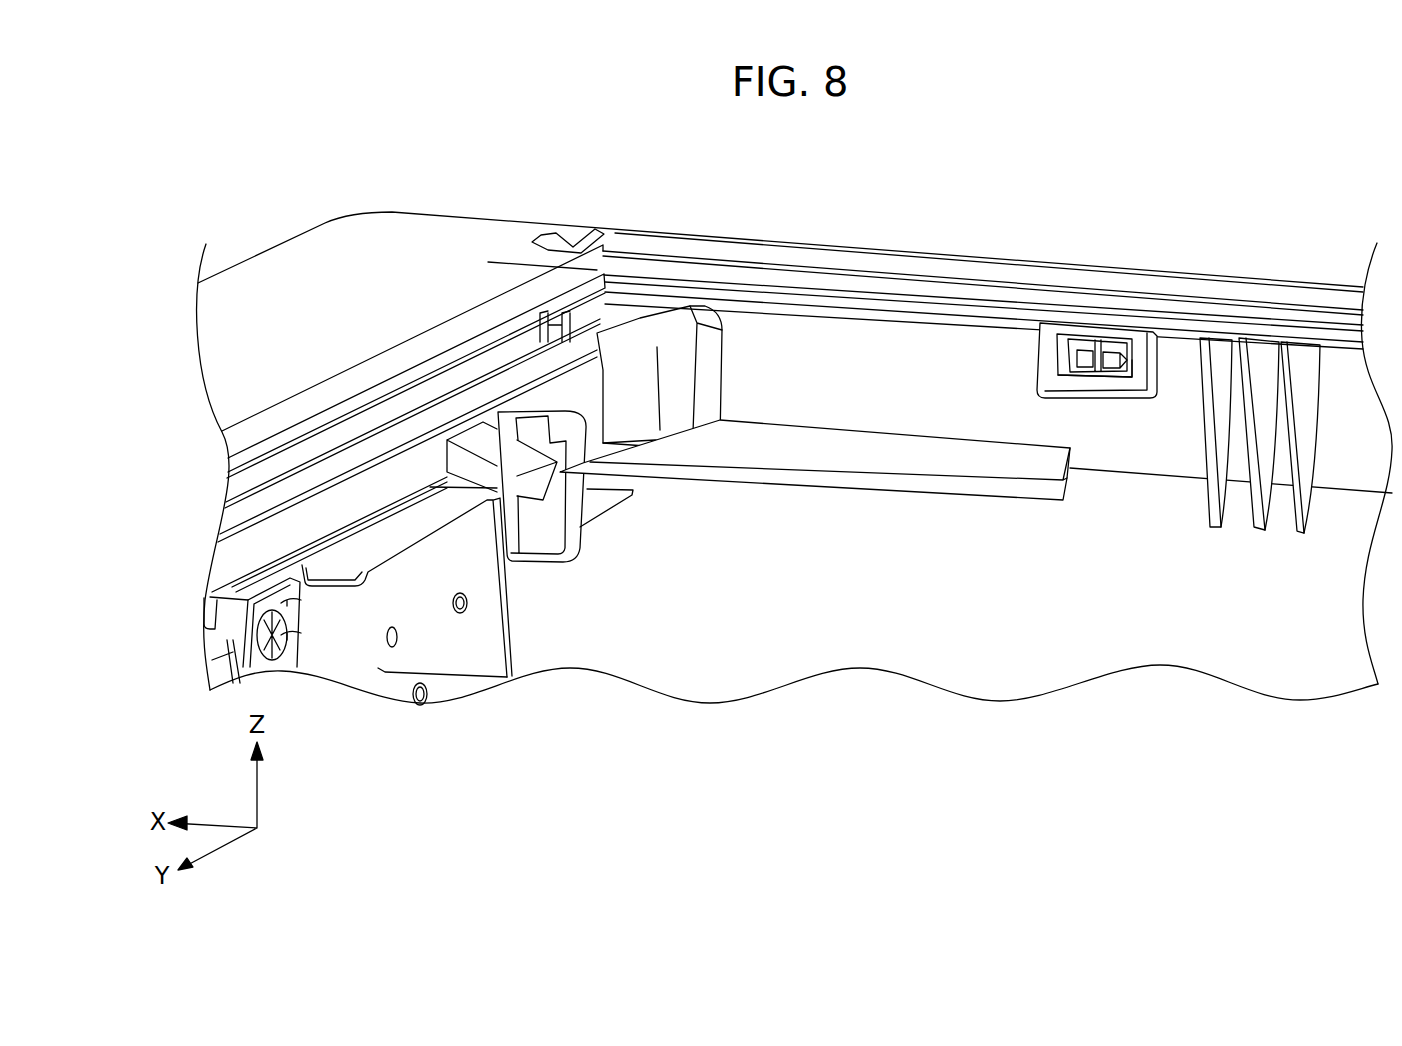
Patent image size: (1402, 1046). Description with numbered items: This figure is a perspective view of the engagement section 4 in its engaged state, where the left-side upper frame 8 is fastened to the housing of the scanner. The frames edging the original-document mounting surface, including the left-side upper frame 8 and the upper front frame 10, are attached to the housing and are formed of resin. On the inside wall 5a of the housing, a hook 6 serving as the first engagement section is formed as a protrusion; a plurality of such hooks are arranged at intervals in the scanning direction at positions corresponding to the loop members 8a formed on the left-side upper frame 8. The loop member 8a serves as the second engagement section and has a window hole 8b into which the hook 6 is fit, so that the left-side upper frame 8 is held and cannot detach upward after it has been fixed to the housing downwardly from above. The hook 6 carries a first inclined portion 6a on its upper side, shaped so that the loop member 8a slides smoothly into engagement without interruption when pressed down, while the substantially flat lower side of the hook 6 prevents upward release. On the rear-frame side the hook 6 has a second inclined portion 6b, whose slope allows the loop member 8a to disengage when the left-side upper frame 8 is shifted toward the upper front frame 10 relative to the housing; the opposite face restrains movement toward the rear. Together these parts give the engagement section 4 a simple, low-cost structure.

The engagement section 4 is at (980, 382).
The inside wall 5a is at (834, 317).
The hook 6 is at (1063, 347).
The first inclined portion 6a is at (1087, 343).
The second inclined portion 6b is at (1133, 372).
The left-side upper frame 8 is at (923, 267).
The loop member 8a is at (1153, 370).
The window hole 8b is at (1103, 343).
The upper front frame 10 is at (349, 248).